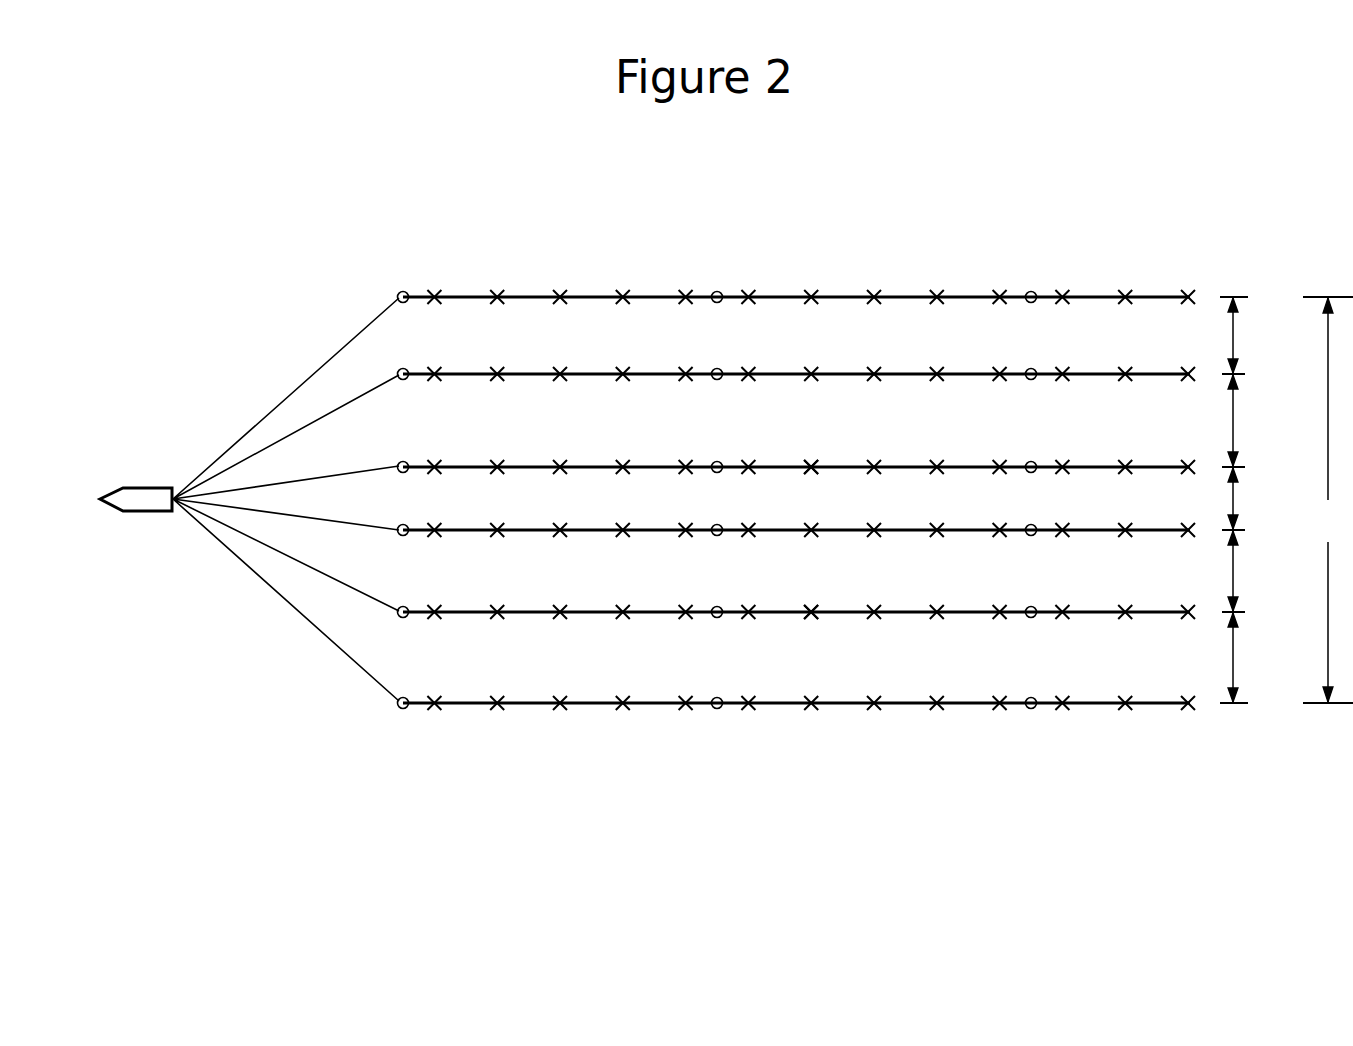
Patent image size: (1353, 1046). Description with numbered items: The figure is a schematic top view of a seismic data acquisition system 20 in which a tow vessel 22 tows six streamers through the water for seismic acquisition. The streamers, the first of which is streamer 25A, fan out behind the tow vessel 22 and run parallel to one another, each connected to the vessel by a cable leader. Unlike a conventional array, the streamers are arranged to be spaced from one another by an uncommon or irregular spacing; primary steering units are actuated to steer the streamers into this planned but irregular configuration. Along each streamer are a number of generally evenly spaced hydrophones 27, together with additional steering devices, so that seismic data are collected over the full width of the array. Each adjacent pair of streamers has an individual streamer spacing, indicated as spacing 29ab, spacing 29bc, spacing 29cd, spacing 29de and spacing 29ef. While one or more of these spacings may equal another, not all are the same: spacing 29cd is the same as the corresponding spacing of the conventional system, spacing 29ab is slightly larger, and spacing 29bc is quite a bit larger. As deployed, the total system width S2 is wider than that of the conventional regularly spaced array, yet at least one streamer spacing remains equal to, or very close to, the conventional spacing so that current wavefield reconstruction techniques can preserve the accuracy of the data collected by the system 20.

The seismic data acquisition system 20 is at (963, 258).
The tow vessel 22 is at (131, 497).
The streamer 25A is at (522, 296).
The hydrophones 27 is at (812, 465).
The streamer spacing 29ab is at (1235, 341).
The streamer spacing 29bc is at (1235, 428).
The streamer spacing 29cd is at (1235, 501).
The streamer spacing 29de is at (1235, 573).
The streamer spacing 29ef is at (1235, 664).
The total system width S2 is at (1328, 500).